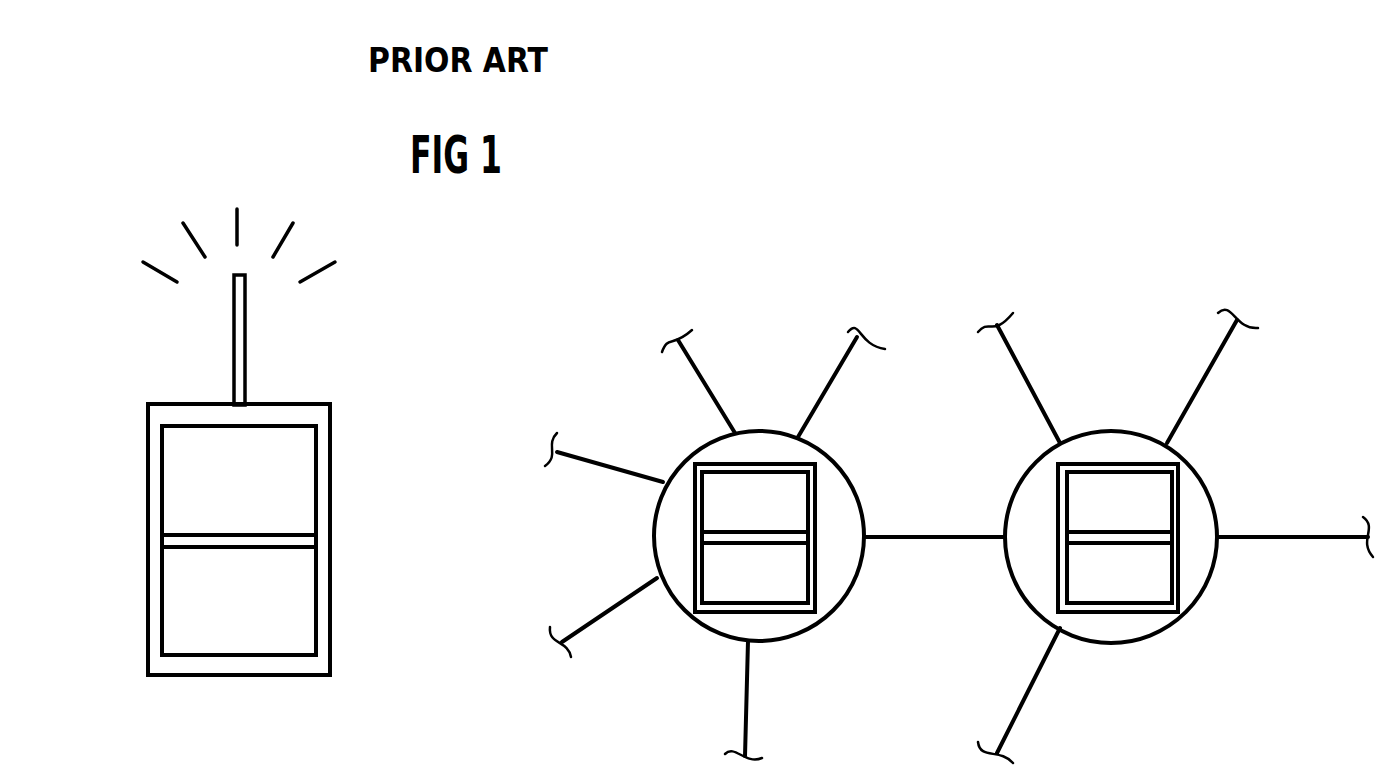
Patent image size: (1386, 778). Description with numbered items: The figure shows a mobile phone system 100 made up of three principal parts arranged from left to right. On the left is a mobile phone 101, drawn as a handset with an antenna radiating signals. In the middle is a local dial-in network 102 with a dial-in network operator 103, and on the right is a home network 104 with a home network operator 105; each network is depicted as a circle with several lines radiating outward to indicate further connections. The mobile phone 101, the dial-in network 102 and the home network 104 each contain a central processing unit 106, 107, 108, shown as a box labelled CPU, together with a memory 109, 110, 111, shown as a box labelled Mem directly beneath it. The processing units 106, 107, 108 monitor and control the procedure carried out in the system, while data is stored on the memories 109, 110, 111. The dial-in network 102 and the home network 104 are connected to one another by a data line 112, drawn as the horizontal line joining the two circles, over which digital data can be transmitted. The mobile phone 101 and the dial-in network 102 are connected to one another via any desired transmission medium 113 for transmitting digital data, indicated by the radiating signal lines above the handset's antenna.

The mobile phone system 100 is at (640, 235).
The mobile phone 101 is at (323, 420).
The local dial-in network 102 is at (760, 405).
The dial-in network operator 103 is at (822, 622).
The home network 104 is at (1110, 405).
The home network operator 105 is at (1177, 622).
The central processing unit 106 is at (295, 482).
The central processing unit 107 is at (797, 500).
The central processing unit 108 is at (1157, 500).
The memory 109 is at (295, 602).
The memory 110 is at (797, 572).
The memory 111 is at (1160, 572).
The data line 112 is at (944, 535).
The transmission medium 113 is at (461, 345).